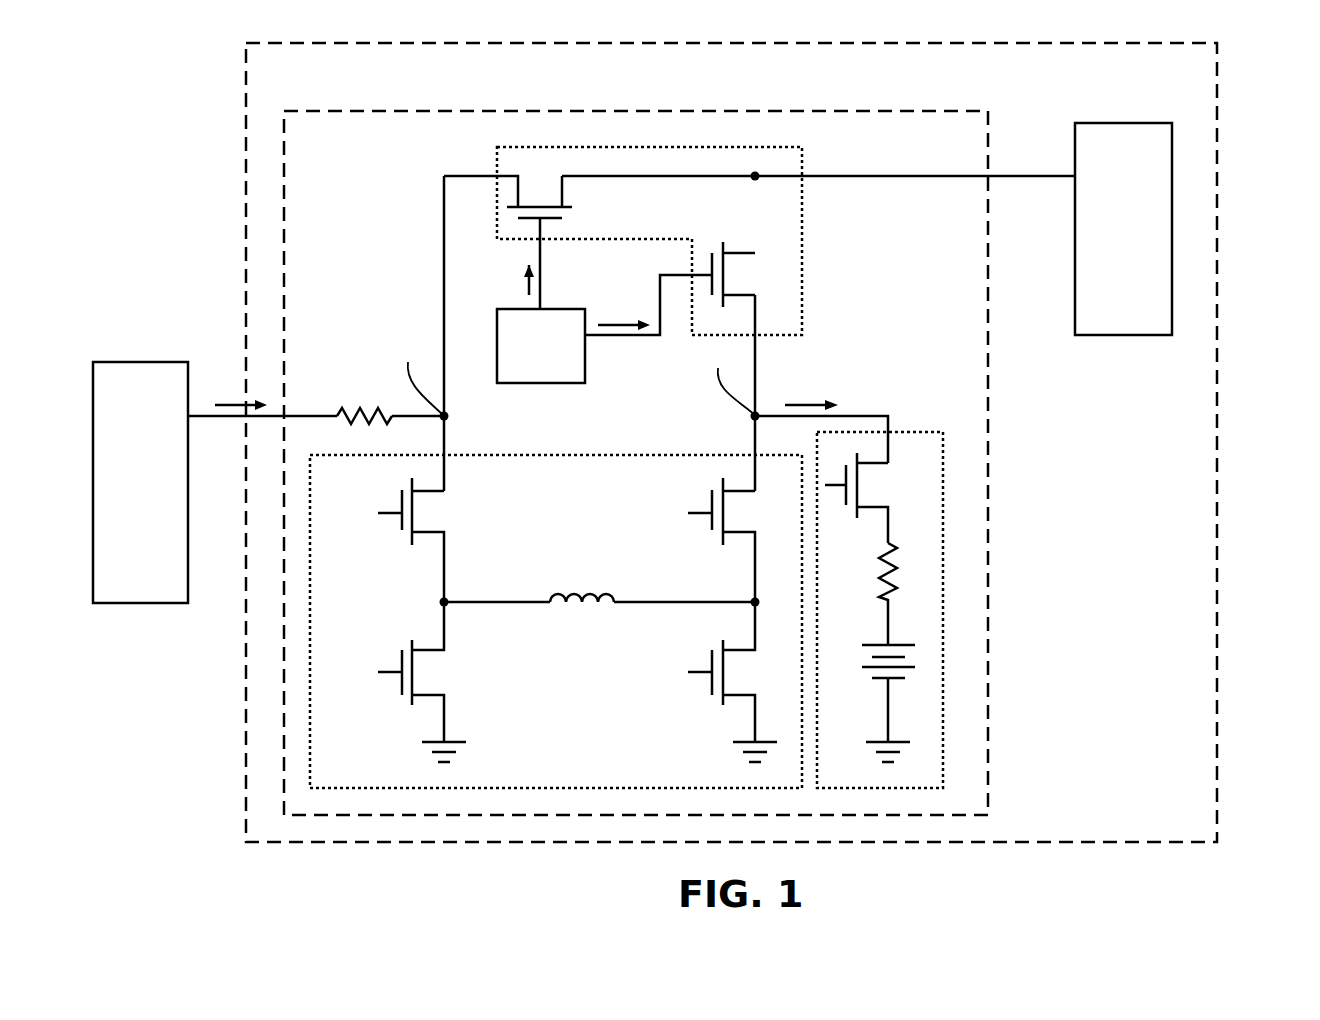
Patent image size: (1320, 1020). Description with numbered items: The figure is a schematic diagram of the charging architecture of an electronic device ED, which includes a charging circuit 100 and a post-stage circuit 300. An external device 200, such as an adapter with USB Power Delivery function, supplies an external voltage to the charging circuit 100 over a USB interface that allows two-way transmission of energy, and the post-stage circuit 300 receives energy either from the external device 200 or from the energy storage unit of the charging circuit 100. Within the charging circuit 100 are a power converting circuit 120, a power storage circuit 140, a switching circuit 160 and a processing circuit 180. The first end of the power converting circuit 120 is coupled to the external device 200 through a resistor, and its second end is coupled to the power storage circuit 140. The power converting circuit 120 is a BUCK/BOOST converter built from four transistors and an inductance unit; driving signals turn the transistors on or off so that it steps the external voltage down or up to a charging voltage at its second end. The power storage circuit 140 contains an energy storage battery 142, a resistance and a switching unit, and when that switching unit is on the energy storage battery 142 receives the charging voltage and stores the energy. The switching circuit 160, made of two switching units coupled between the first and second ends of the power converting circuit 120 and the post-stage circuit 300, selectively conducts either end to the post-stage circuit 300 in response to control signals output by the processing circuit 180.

The charging circuit 100 is at (402, 111).
The power converting circuit 120 is at (578, 455).
The power storage circuit 140 is at (890, 563).
The energy storage battery 142 is at (868, 667).
The switching circuit 160 is at (802, 240).
The processing circuit 180 is at (541, 346).
The external device 200 is at (140, 482).
The post-stage circuit 300 is at (1123, 229).
The electronic device ED is at (1217, 593).